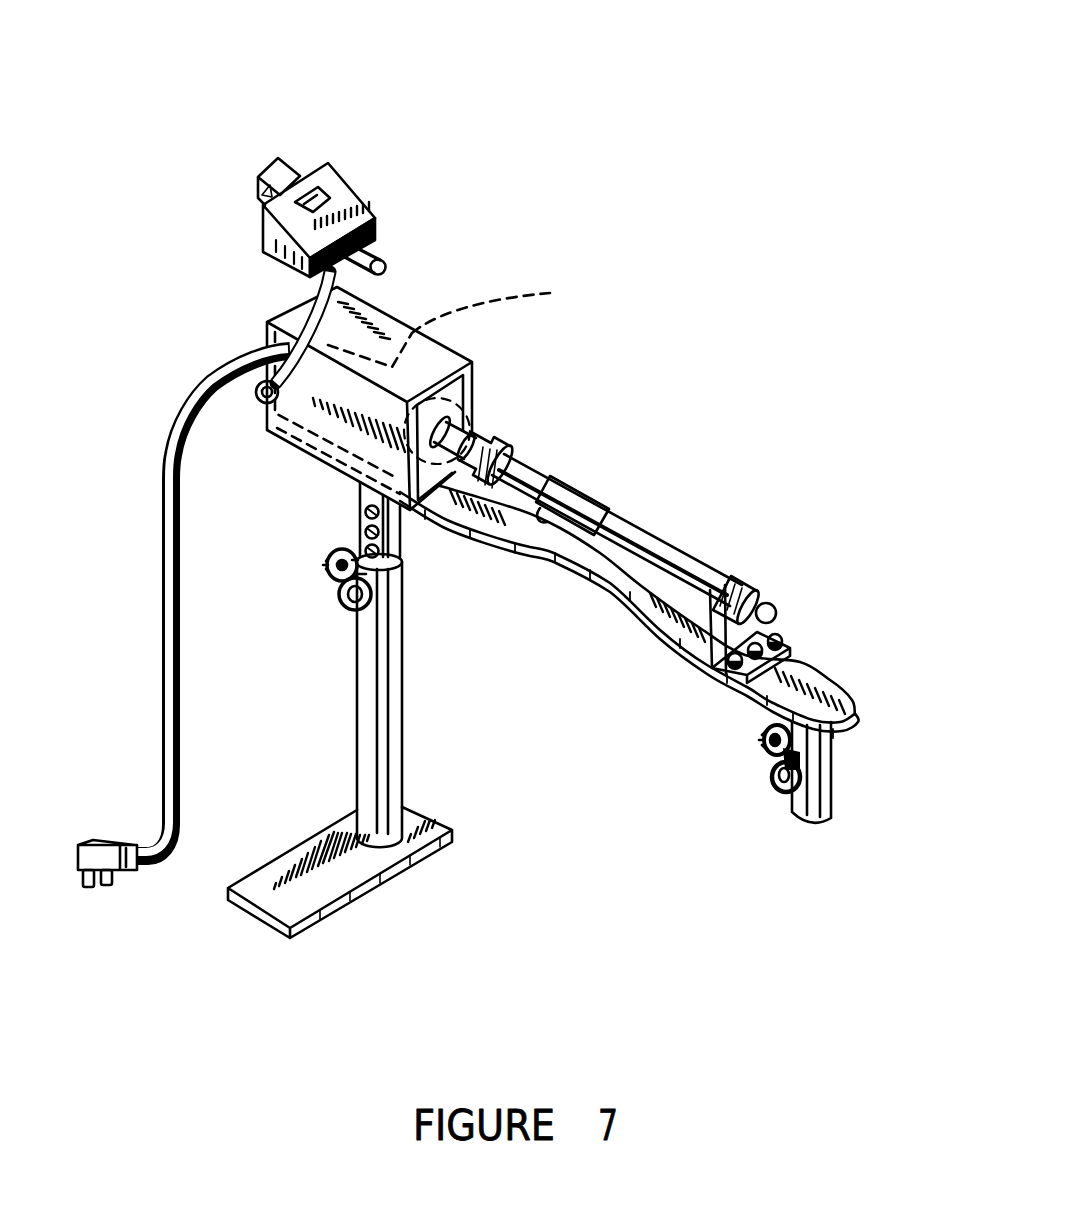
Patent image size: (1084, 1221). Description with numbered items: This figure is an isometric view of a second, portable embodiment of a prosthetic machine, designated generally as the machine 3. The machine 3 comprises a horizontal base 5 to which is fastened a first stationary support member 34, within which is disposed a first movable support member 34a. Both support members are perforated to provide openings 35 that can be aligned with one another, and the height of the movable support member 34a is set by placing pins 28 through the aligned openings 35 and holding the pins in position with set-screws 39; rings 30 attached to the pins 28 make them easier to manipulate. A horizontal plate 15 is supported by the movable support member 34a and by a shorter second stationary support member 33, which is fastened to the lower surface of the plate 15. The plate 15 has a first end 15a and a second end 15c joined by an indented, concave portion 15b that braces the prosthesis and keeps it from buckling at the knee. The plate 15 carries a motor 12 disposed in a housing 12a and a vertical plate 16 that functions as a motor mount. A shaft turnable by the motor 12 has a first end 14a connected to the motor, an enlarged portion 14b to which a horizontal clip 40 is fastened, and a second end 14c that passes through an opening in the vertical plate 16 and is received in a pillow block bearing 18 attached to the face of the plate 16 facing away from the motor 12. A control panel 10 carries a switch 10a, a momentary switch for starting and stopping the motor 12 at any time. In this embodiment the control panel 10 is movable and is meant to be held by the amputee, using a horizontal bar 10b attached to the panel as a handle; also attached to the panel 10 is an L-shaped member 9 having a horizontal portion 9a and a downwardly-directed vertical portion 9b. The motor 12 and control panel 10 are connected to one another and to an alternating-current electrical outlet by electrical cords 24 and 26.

The prosthetic machine 3 is at (672, 218).
The horizontal base 5 is at (278, 902).
The L-shaped member 9 is at (290, 167).
The horizontal portion 9a is at (297, 178).
The vertical portion 9b is at (263, 193).
The control panel 10 is at (377, 222).
The switch 10a is at (325, 194).
The horizontal bar 10b is at (383, 267).
The motor 12 is at (428, 387).
The housing 12a is at (462, 358).
The first end 14a is at (473, 413).
The enlarged portion 14b is at (515, 462).
The second end 14c is at (695, 562).
The horizontal plate 15 is at (546, 632).
The first end 15a is at (702, 664).
The indented portion 15b is at (600, 592).
The second end 15c is at (478, 540).
The vertical plate 16 is at (742, 587).
The pillow block bearing 18 is at (772, 604).
The electrical cord 24 is at (305, 315).
The electrical cord 26 is at (162, 563).
The pins 28 is at (806, 748).
The rings 30 is at (775, 790).
The second stationary support member 33 is at (840, 790).
The first stationary support member 34 is at (355, 683).
The first movable support member 34a is at (360, 507).
The openings 35 is at (329, 552).
The set-screws 39 is at (764, 740).
The horizontal clip 40 is at (542, 490).